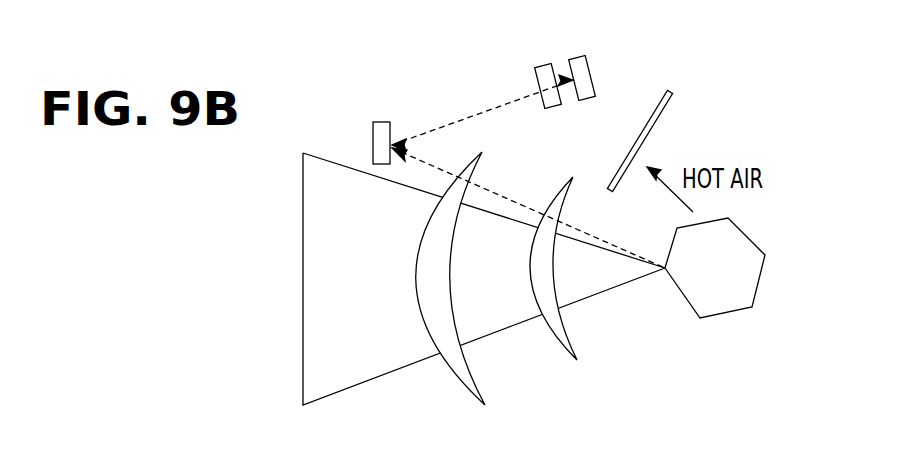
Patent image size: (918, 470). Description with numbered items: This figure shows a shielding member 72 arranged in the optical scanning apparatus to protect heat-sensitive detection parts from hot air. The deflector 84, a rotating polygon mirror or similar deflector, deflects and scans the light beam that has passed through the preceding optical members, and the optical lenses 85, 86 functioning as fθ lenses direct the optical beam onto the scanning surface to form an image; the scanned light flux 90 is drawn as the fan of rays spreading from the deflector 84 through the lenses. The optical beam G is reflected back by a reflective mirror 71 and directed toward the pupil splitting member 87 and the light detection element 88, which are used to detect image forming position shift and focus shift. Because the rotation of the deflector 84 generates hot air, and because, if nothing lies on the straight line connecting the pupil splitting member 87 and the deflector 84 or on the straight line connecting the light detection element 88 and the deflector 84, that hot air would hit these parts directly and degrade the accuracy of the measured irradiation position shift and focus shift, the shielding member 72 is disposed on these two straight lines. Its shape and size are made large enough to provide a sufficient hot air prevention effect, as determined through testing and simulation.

The reflective mirror 71 is at (385, 121).
The shielding member 72 is at (670, 90).
The deflector 84 is at (740, 228).
The optical lens 85 is at (567, 181).
The optical lens 86 is at (470, 169).
The pupil splitting member 87 is at (541, 66).
The light detection element 88 is at (582, 57).
The light flux 90 is at (484, 311).
The optical beam G is at (467, 113).